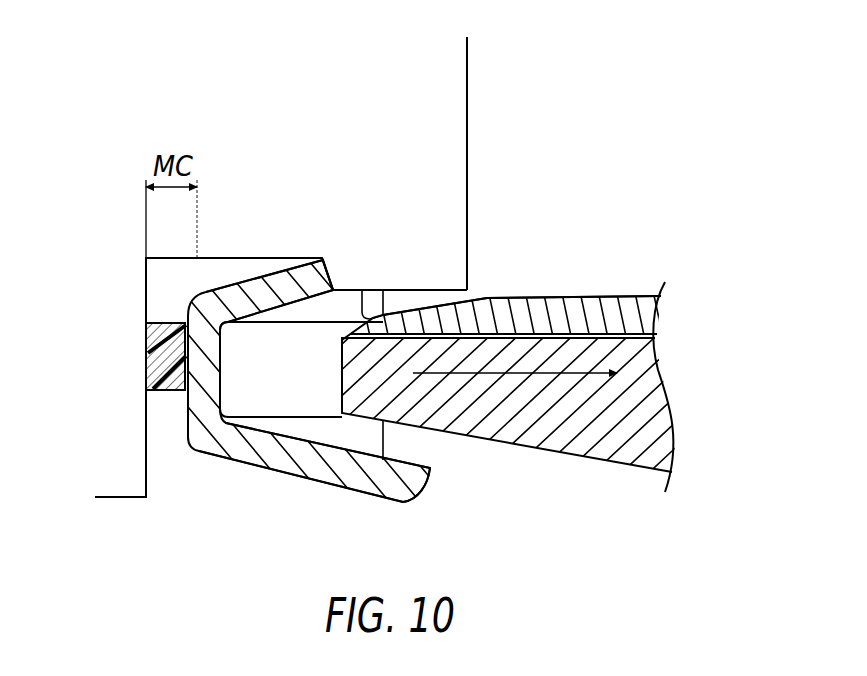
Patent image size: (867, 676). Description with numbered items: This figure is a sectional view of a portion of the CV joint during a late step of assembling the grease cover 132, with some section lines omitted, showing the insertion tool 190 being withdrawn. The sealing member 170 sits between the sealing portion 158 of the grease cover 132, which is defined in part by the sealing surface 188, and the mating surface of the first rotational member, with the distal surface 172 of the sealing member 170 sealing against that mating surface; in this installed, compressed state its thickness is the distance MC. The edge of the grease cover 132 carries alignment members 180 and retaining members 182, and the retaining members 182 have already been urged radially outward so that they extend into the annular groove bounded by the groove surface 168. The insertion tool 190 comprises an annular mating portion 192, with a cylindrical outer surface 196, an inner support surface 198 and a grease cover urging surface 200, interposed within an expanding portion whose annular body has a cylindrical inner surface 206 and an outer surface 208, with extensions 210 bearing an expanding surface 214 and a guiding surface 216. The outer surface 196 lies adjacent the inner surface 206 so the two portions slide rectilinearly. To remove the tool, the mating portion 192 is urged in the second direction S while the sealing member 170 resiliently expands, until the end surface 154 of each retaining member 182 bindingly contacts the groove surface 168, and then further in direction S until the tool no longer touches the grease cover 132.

The grease cover 132 is at (266, 452).
The end surface 154 is at (337, 271).
The sealing portion 158 is at (188, 414).
The groove surface 168 is at (250, 278).
The sealing member 170 is at (147, 352).
The distal surface 172 is at (144, 368).
The alignment member 180 is at (346, 303).
The retaining member 182 is at (215, 266).
The sealing surface 188 is at (182, 316).
The insertion tool 190 is at (598, 276).
The annular mating portion 192 is at (357, 383).
The cylindrical outer surface 196 is at (417, 295).
The inner support surface 198 is at (451, 432).
The grease cover urging surface 200 is at (340, 396).
The cylindrical inner surface 206 is at (398, 345).
The outer surface 208 is at (636, 294).
The extension 210 is at (478, 322).
The expanding surface 214 is at (369, 300).
The guiding surface 216 is at (513, 325).
The second direction S is at (541, 343).